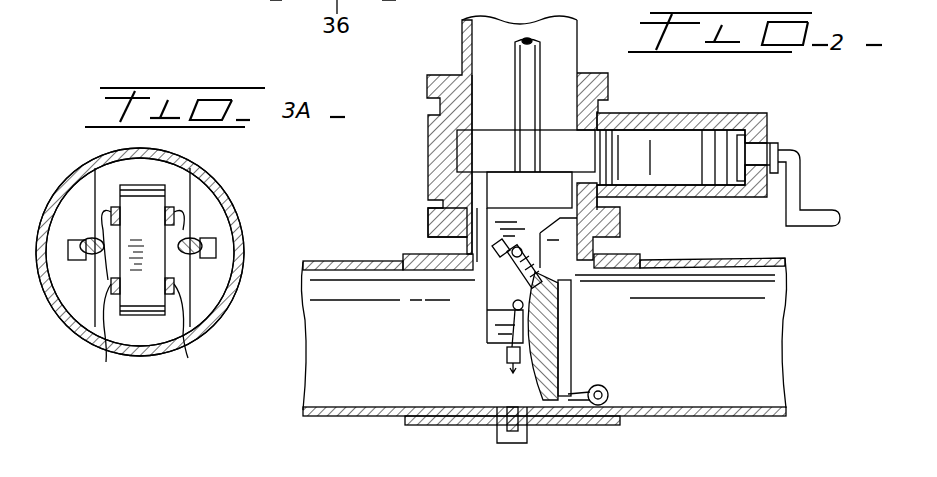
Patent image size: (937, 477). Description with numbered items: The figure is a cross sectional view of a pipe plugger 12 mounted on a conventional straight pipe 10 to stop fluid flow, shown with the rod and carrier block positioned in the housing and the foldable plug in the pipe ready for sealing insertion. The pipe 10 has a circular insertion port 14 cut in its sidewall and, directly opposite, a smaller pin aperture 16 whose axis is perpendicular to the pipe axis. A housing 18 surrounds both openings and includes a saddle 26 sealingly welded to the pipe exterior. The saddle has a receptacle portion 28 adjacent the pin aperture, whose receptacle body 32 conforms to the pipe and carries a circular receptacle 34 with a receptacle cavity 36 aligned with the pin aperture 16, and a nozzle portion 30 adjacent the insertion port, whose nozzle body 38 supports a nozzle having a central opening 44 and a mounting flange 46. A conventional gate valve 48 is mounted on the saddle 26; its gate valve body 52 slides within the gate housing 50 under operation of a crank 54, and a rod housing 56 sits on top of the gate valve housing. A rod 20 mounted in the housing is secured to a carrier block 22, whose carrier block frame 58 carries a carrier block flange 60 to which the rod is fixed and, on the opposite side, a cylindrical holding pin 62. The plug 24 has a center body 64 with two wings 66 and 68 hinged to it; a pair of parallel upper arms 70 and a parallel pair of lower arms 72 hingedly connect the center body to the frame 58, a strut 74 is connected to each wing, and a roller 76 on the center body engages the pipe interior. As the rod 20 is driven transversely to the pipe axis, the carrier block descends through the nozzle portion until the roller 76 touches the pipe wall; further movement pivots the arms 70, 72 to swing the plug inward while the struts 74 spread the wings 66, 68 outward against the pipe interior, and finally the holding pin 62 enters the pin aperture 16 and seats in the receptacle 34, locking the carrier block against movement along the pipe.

In FIG. 3A, the pipe 10 is at (228, 298).
In FIG. 2, the pipe 10 is at (806, 322).
In FIG. 2, the pipe plugger 12 is at (426, 168).
In FIG. 2, the insertion port 14 is at (575, 280).
In FIG. 2, the pin aperture 16 is at (507, 412).
In FIG. 2, the housing 18 is at (420, 254).
In FIG. 2, the rod 20 is at (520, 60).
In FIG. 2, the carrier block 22 is at (487, 290).
In FIG. 2, the plug 24 is at (585, 340).
In FIG. 2, the saddle 26 is at (635, 256).
In FIG. 2, the receptacle portion 28 is at (402, 425).
In FIG. 2, the nozzle portion 30 is at (402, 260).
In FIG. 2, the receptacle body 32 is at (468, 422).
In FIG. 2, the receptacle 34 is at (508, 432).
In FIG. 2, the receptacle cavity 36 is at (520, 428).
In FIG. 2, the nozzle body 38 is at (645, 260).
In FIG. 2, the central opening 44 is at (598, 238).
In FIG. 2, the mounting flange 46 is at (440, 229).
In FIG. 2, the gate valve 48 is at (668, 106).
In FIG. 2, the gate housing 50 is at (444, 143).
In FIG. 2, the gate valve body 52 is at (712, 133).
In FIG. 2, the crank 54 is at (795, 180).
In FIG. 2, the rod housing 56 is at (584, 30).
In FIG. 2, the carrier block frame 58 is at (487, 320).
In FIG. 2, the carrier block flange 60 is at (563, 175).
In FIG. 2, the holding pin 62 is at (510, 371).
In FIG. 3A, the center body 64 is at (150, 172).
In FIG. 3A, the wing 66 is at (228, 272).
In FIG. 3A, the wing 68 is at (76, 306).
In FIG. 3A, the upper arms 70 is at (100, 172).
In FIG. 2, the upper arms 70 is at (519, 248).
In FIG. 3A, the lower arms 72 is at (154, 333).
In FIG. 2, the lower arms 72 is at (513, 325).
In FIG. 3A, the strut 74 is at (82, 240).
In FIG. 2, the strut 74 is at (497, 262).
In FIG. 2, the roller 76 is at (608, 393).